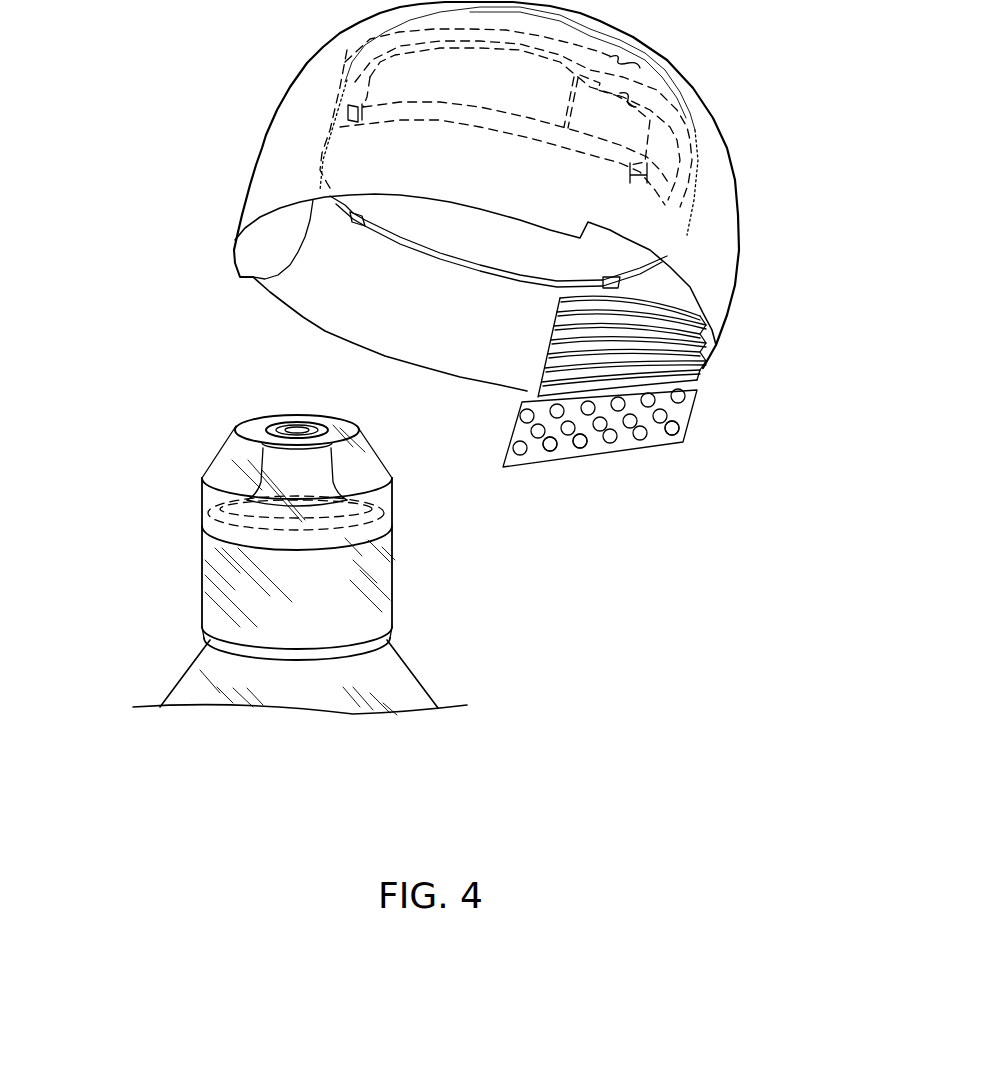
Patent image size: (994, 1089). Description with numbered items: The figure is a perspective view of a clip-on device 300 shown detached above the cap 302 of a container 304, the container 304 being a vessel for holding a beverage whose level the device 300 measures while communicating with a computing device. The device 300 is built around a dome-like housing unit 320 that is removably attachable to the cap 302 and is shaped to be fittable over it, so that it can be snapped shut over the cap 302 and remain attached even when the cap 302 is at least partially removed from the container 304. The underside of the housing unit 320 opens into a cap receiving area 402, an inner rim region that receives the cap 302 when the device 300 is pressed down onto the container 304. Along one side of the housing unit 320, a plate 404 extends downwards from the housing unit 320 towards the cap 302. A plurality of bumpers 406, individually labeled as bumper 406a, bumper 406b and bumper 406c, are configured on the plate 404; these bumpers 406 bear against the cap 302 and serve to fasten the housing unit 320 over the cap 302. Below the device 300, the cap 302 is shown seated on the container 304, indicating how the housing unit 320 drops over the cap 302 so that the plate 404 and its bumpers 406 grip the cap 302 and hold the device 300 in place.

The device 300 is at (168, 114).
The cap 302 is at (222, 464).
The container 304 is at (412, 687).
The housing unit 320 is at (722, 243).
The cap receiving area 402 is at (400, 223).
The plate 404 is at (686, 413).
The bumpers 406 is at (512, 429).
The bumper 406a is at (673, 436).
The bumper 406b is at (581, 448).
The bumper 406c is at (548, 450).